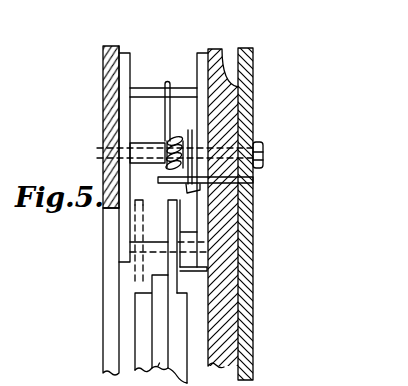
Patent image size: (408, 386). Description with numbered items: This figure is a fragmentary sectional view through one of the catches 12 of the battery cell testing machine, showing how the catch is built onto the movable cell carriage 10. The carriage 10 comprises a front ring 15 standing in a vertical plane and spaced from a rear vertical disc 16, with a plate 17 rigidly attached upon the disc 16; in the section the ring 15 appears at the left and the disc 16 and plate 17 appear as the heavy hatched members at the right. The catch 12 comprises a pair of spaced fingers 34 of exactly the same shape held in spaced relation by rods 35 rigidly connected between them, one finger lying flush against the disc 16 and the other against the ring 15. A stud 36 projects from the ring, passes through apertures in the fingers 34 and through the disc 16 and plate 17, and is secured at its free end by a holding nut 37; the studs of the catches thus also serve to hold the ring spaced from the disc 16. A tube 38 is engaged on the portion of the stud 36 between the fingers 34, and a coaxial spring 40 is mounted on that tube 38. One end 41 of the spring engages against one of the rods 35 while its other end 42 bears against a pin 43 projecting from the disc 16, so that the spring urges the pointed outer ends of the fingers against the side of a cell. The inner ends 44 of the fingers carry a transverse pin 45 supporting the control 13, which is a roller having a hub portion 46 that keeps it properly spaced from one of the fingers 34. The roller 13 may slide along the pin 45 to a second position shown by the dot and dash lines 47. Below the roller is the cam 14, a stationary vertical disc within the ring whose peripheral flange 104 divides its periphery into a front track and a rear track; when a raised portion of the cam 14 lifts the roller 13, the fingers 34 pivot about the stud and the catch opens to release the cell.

The movable cell carriage 10 is at (97, 115).
The catch 12 is at (120, 127).
The movable control 13 is at (168, 220).
The cam 14 is at (137, 322).
The front ring 15 is at (104, 46).
The rear vertical disc 16 is at (208, 52).
The plate 17 is at (250, 48).
The fingers 34 is at (126, 53).
The rods 35 is at (137, 90).
The stud 36 is at (103, 158).
The holding nut 37 is at (258, 144).
The tube 38 is at (137, 147).
The coaxial spring 40 is at (185, 140).
The end of spring 41 is at (172, 67).
The other end of spring 42 is at (253, 198).
The pin 43 is at (253, 180).
The inner ends of fingers 44 is at (118, 240).
The transverse pin 45 is at (160, 250).
The hub portion 46 is at (203, 268).
The dot and dash lines 47 is at (133, 278).
The peripheral flange 104 is at (158, 366).